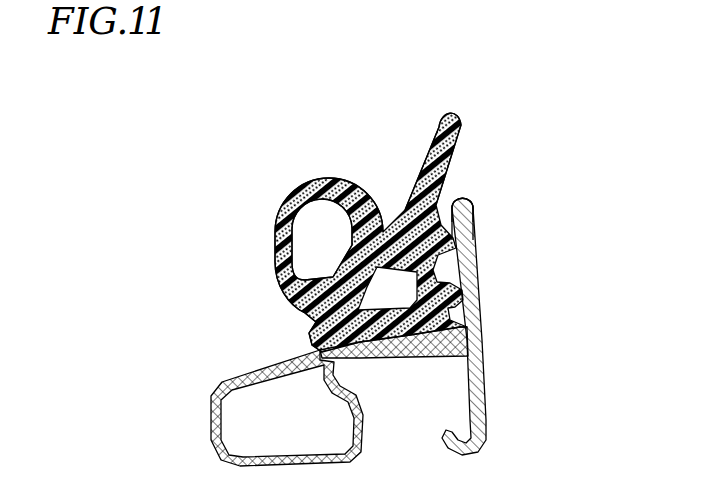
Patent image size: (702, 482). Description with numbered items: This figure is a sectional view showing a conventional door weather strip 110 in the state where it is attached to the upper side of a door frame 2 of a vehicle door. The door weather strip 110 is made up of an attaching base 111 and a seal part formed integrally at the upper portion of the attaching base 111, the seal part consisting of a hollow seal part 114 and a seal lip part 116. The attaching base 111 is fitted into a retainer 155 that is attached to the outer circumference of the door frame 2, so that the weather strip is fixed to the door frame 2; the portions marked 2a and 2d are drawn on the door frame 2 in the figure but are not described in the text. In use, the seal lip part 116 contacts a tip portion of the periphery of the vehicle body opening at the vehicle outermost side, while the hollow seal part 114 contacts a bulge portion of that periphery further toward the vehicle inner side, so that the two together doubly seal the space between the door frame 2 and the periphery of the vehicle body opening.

The door frame 2 is at (478, 303).
The panel end edge 2a is at (473, 210).
The panel flange tip 2d is at (445, 212).
The door weather strip 110 is at (300, 174).
The attaching base 111 is at (480, 355).
The hollow seal part 114 is at (278, 224).
The seal lip part 116 is at (432, 135).
The retainer 155 is at (306, 328).